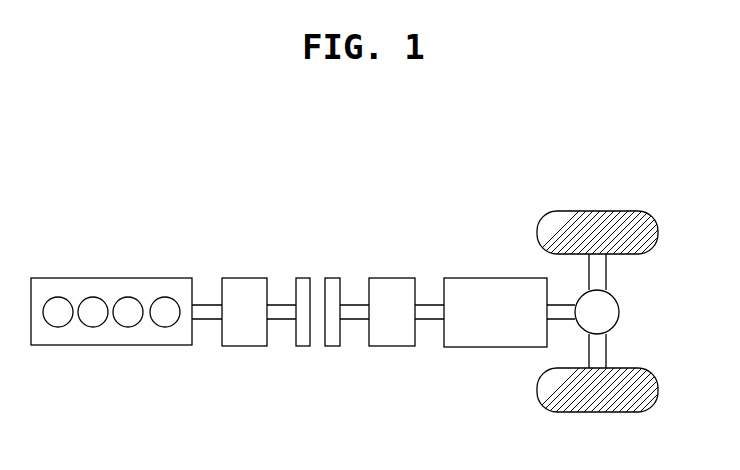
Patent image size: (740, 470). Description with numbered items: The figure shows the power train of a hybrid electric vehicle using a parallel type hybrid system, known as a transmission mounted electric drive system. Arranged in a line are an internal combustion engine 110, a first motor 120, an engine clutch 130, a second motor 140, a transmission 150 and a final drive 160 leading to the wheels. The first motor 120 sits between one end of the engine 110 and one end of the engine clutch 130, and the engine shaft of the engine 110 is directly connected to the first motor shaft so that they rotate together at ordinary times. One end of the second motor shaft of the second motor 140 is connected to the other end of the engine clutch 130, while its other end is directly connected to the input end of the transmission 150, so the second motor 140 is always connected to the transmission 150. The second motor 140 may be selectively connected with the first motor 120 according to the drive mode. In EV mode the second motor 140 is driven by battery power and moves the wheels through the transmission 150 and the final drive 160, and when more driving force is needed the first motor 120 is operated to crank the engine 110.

The internal combustion engine 110 is at (113, 278).
The first motor 120 is at (243, 278).
The engine clutch 130 is at (332, 278).
The second motor 140 is at (390, 278).
The transmission 150 is at (480, 278).
The final drive 160 is at (619, 310).